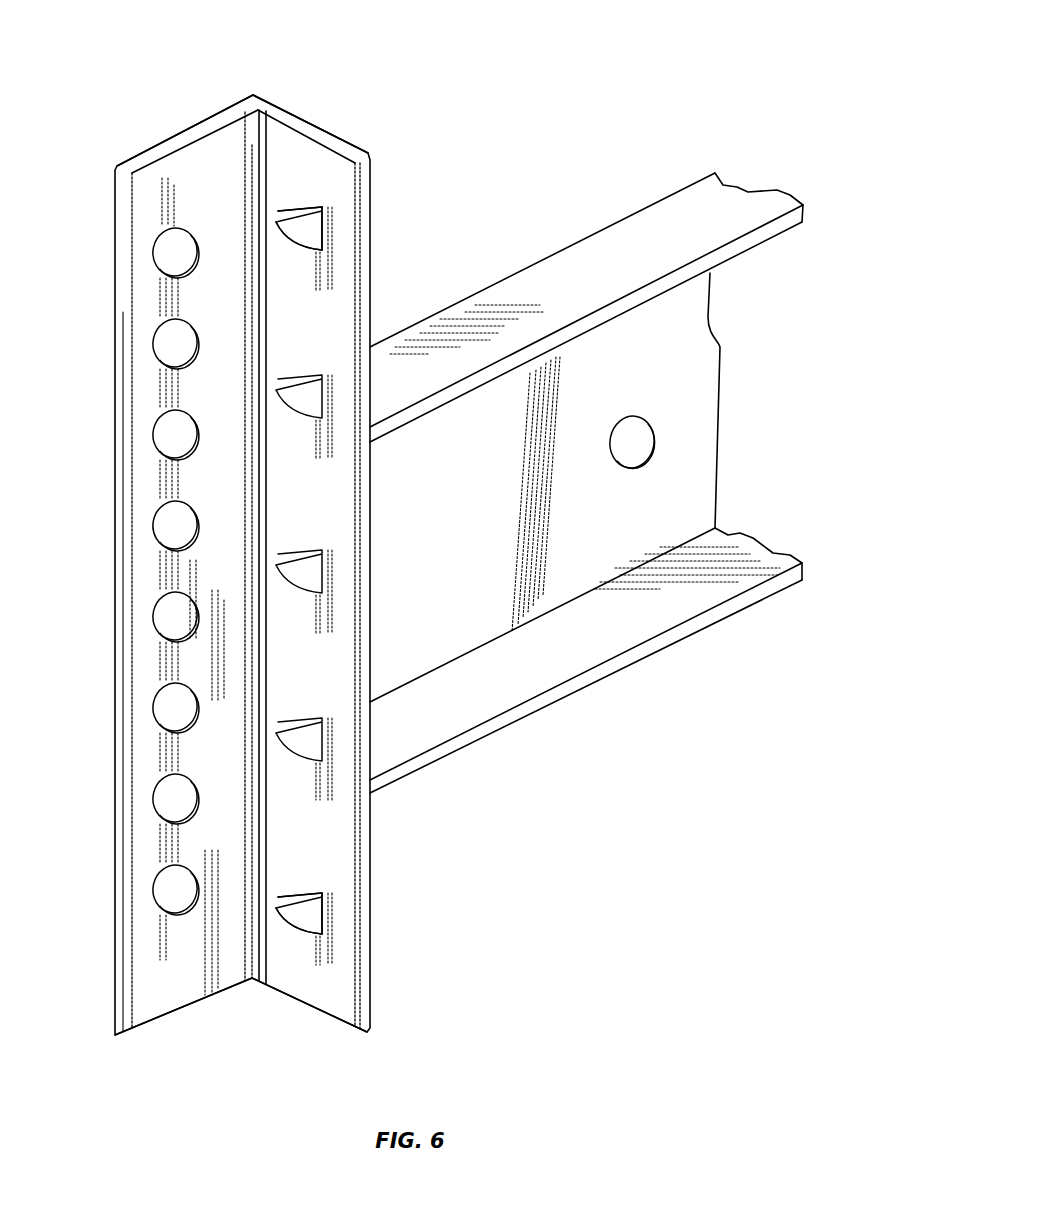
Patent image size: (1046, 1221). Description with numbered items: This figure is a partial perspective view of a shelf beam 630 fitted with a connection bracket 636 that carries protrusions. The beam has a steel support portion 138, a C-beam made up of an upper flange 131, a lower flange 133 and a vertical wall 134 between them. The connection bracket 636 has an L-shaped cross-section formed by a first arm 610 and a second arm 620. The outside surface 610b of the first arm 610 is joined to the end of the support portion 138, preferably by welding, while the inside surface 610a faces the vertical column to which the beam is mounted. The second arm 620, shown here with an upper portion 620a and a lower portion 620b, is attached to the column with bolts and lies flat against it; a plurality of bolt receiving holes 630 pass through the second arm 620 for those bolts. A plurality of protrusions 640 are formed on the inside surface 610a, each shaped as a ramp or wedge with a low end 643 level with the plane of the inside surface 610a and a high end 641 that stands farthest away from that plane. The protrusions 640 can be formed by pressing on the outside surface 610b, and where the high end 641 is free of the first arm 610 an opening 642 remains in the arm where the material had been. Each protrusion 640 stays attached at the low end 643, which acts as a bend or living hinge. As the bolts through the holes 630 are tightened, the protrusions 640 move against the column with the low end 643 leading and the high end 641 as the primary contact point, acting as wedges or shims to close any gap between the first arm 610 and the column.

The upper flange 131 is at (617, 245).
The lower flange 133 is at (633, 617).
The vertical wall 134 is at (685, 345).
The support portion 138 is at (548, 255).
The first arm 610 is at (362, 932).
The inside surface 610a is at (280, 148).
The outside surface 610b is at (370, 983).
The second arm 620 is at (183, 990).
The upper portion of first leg 620a is at (202, 173).
The lower portion of first leg 620b is at (140, 947).
The bolt receiving holes 630 is at (157, 510).
The connection bracket 636 is at (253, 95).
The protrusions 640 is at (305, 230).
The high end 641 is at (274, 224).
The opening 642 is at (285, 210).
The low end 643 is at (322, 223).